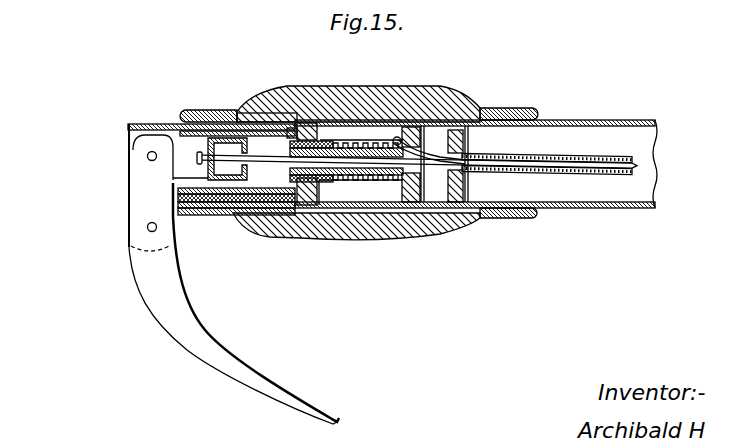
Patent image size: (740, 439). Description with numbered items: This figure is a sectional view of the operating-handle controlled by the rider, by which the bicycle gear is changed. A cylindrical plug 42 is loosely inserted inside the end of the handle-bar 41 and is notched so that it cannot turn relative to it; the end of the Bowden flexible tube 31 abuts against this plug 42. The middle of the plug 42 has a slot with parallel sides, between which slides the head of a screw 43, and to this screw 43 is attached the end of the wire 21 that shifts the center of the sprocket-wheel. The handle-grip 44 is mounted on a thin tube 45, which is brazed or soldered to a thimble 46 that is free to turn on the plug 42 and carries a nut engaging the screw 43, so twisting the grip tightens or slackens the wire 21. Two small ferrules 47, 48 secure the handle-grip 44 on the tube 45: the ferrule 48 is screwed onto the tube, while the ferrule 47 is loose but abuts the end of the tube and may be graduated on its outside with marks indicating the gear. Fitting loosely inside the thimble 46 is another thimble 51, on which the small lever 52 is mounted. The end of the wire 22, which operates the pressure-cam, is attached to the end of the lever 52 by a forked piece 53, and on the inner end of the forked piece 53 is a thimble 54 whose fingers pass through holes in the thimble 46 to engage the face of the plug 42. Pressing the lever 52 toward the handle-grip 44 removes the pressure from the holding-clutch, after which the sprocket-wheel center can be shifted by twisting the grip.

The wire 21 is at (415, 119).
The wire 22 is at (261, 216).
The Bowden flexible tube 31 is at (620, 160).
The handle-bar 41 is at (630, 121).
The cylindrical plug 42 is at (452, 209).
The screw 43 is at (377, 183).
The handle-grip 44 is at (253, 102).
The thin tube 45 is at (319, 123).
The thimble 46 is at (258, 117).
The ferrule 47 is at (522, 110).
The ferrule 48 is at (198, 110).
The thimble 51 is at (147, 124).
The small lever 52 is at (234, 303).
The forked piece 53 is at (188, 153).
The thimble 54 is at (267, 187).